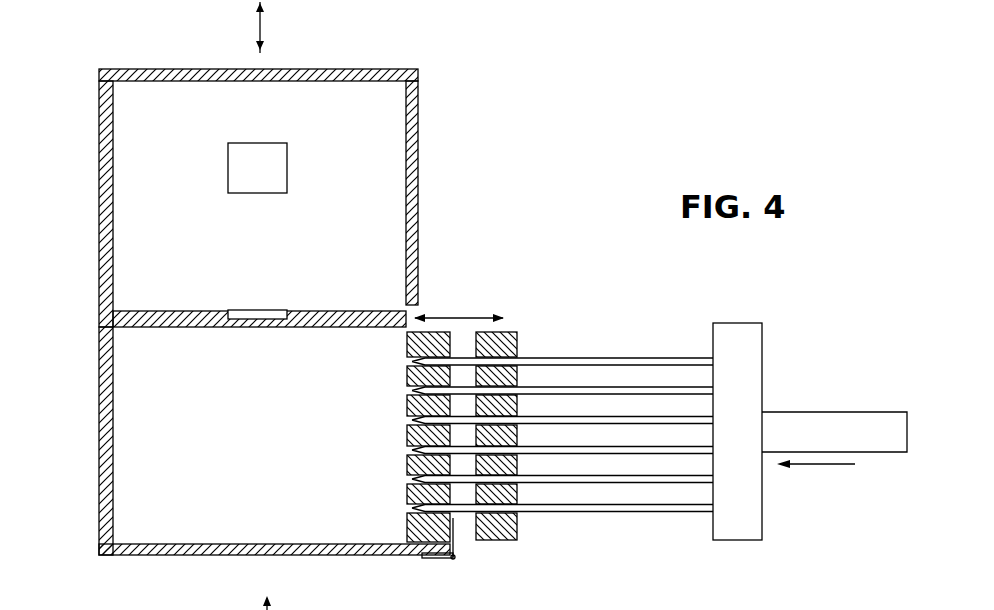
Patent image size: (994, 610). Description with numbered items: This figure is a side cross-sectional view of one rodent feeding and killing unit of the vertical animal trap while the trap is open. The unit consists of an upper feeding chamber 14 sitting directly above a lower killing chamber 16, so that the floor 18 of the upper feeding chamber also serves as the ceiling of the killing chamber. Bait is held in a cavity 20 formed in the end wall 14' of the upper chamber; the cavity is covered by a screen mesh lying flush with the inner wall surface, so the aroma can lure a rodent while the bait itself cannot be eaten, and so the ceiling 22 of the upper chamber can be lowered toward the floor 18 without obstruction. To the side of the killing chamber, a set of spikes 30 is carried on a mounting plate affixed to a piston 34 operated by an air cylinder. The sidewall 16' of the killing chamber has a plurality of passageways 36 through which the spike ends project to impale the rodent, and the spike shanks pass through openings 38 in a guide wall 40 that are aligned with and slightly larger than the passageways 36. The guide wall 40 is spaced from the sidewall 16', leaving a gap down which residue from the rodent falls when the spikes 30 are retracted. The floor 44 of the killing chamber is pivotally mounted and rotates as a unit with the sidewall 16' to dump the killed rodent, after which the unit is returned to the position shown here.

The upper feeding chamber 14 is at (235, 204).
The end wall of the upper chamber 14' is at (178, 138).
The lower killing chamber 16 is at (83, 441).
The sidewall of the killing chamber 16' is at (369, 402).
The floor of the upper feeding chamber 18 is at (348, 322).
The cavity 20 is at (281, 172).
The ceiling of the upper chamber 22 is at (186, 69).
The spikes 30 is at (650, 360).
The piston 34 is at (852, 425).
The passageways 36 is at (408, 452).
The openings 38 is at (472, 516).
The guide wall 40 is at (503, 531).
The floor of the killing chamber 44 is at (225, 550).